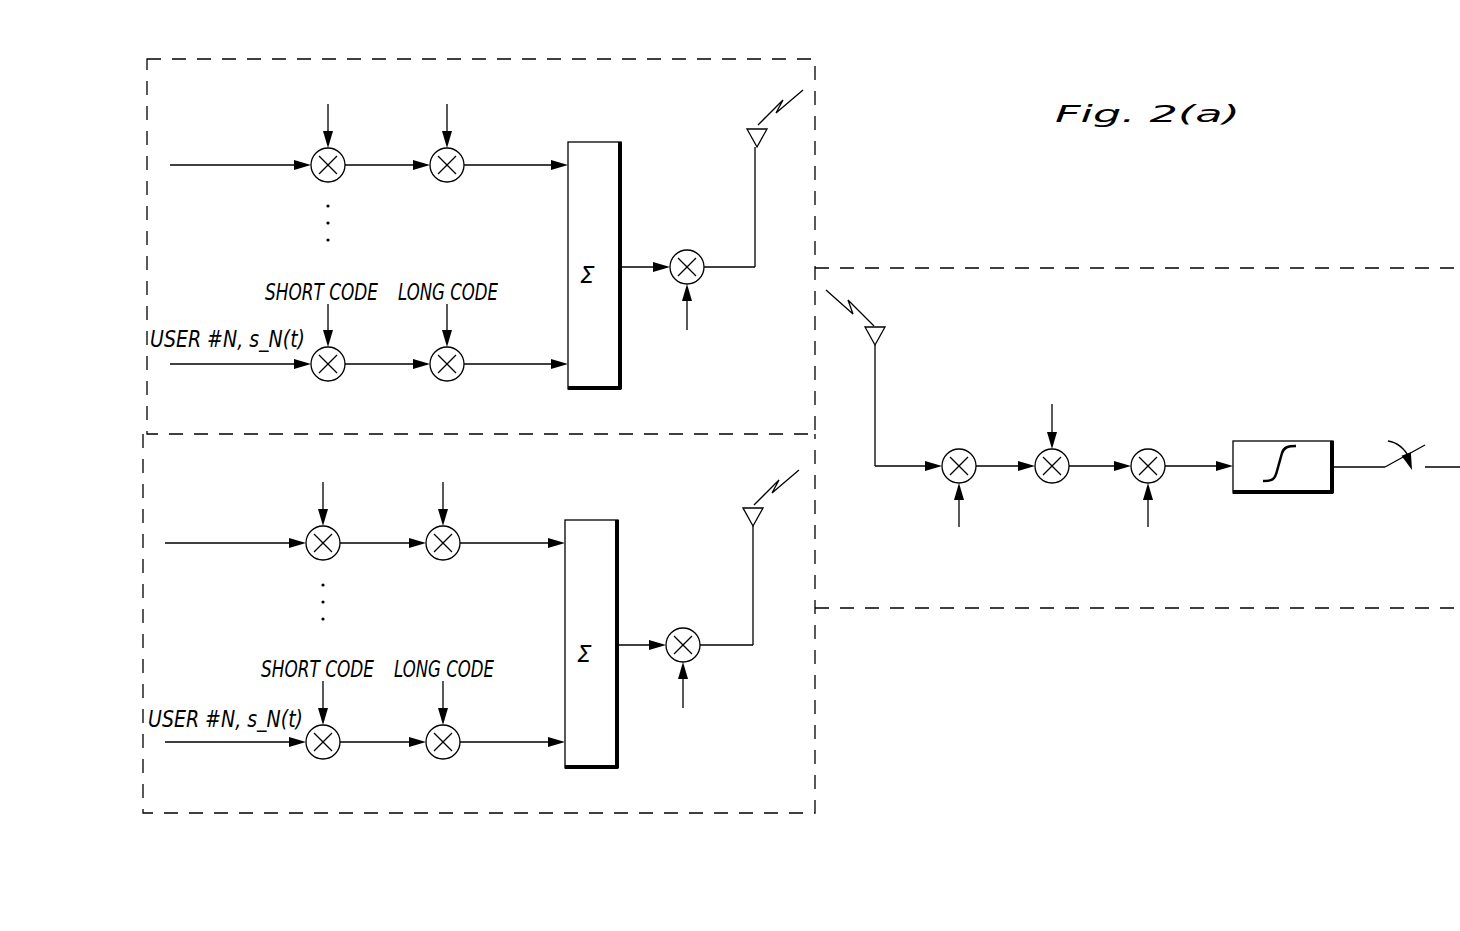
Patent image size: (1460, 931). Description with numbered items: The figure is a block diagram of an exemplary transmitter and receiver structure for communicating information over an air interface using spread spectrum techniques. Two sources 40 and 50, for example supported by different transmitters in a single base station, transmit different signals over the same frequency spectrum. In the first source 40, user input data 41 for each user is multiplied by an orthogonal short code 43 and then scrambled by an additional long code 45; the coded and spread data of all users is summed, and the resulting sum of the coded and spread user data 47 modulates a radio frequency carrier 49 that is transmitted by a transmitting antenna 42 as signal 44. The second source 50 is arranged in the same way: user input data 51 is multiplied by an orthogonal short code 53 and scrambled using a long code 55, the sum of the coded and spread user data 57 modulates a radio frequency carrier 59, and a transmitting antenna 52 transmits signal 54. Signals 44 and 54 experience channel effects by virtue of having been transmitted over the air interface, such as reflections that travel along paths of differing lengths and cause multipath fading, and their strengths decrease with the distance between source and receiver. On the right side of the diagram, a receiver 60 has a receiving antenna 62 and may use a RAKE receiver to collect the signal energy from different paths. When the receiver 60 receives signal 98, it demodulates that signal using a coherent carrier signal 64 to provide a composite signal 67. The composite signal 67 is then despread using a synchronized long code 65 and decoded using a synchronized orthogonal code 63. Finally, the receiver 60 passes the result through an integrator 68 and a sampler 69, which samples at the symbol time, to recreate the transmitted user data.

The source 40 is at (722, 59).
The user input data 41 is at (187, 119).
The transmitting antenna 42 is at (766, 134).
The orthogonal short code 43 is at (324, 74).
The signal 44 is at (803, 90).
The long code 45 is at (451, 74).
The sum of the coded and spread user data 47 is at (634, 264).
The radio frequency carrier 49 is at (686, 364).
The source 50 is at (715, 813).
The user input data 51 is at (173, 498).
The transmitting antenna 52 is at (762, 513).
The orthogonal short code 53 is at (320, 452).
The signal 54 is at (799, 470).
The long code 55 is at (447, 452).
The sum of the coded and spread user data 57 is at (630, 642).
The radio frequency carrier 59 is at (682, 742).
The receiver 60 is at (1287, 268).
The receiving antenna 62 is at (885, 333).
The synchronized orthogonal code 63 is at (1146, 560).
The carrier signal 64 is at (962, 590).
The synchronized long code 65 is at (1048, 378).
The composite signal 67 is at (995, 464).
The integrator 68 is at (1280, 495).
The sampler 69 is at (1409, 446).
The signal 98 is at (826, 290).